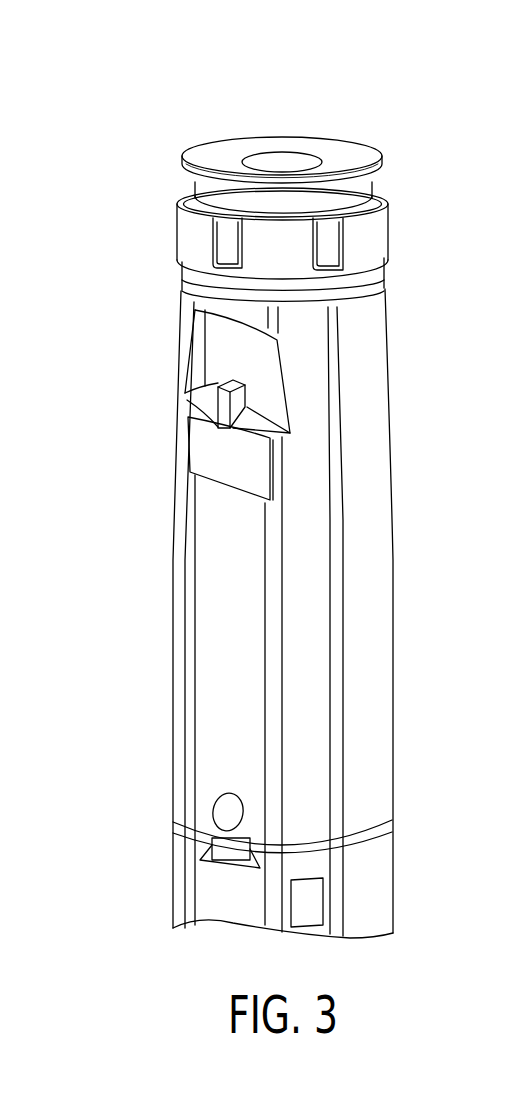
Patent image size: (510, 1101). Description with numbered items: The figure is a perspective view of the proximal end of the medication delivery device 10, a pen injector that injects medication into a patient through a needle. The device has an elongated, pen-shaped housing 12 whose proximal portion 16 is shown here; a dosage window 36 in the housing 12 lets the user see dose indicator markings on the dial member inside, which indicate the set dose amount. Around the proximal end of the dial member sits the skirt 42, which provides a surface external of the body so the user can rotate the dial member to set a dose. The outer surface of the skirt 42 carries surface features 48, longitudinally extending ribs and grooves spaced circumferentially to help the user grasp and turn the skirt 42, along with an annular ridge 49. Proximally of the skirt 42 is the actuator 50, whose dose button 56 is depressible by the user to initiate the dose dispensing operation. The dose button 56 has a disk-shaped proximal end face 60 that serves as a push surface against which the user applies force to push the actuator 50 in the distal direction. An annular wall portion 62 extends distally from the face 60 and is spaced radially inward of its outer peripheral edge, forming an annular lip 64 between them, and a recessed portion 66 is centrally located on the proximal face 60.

The medication delivery device 10 is at (247, 480).
The housing 12 is at (210, 613).
The proximal portion 16 is at (106, 330).
The dosage window 36 is at (220, 377).
The skirt 42 is at (307, 267).
The surface features 48 is at (226, 247).
The annular ridge 49 is at (389, 263).
The actuator 50 is at (287, 118).
The dose button 56 is at (347, 143).
The proximal end face 60 is at (207, 158).
The annular wall portion 62 is at (365, 192).
The annular lip 64 is at (184, 153).
The recessed portion 66 is at (282, 163).